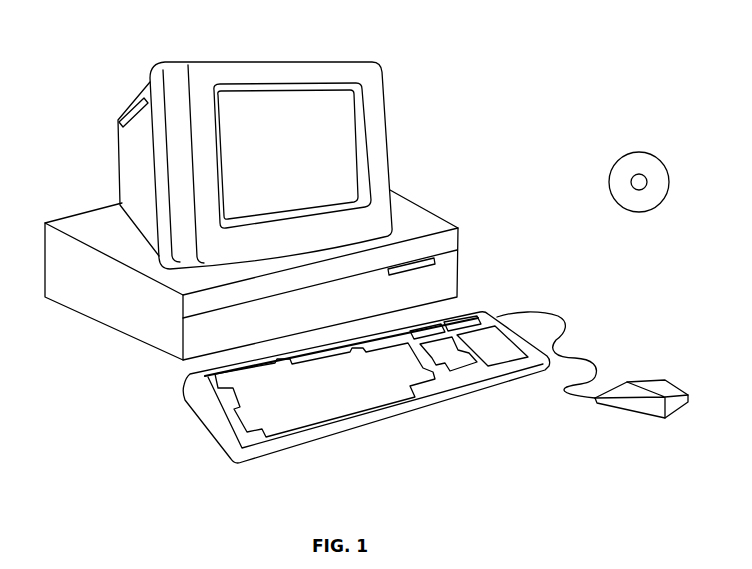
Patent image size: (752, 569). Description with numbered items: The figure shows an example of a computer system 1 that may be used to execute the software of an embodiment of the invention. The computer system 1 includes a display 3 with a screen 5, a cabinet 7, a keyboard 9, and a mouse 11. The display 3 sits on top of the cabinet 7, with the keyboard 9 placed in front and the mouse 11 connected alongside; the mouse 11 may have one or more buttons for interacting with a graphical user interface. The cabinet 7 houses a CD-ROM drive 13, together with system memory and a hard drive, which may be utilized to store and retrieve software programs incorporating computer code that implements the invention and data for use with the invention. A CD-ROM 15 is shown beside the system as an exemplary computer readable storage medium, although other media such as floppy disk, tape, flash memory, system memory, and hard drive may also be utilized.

The computer system 1 is at (566, 43).
The display 3 is at (385, 163).
The screen 5 is at (356, 120).
The cabinet 7 is at (150, 349).
The keyboard 9 is at (372, 427).
The mouse 11 is at (677, 384).
The CD-ROM drive 13 is at (434, 254).
The CD-ROM 15 is at (653, 153).